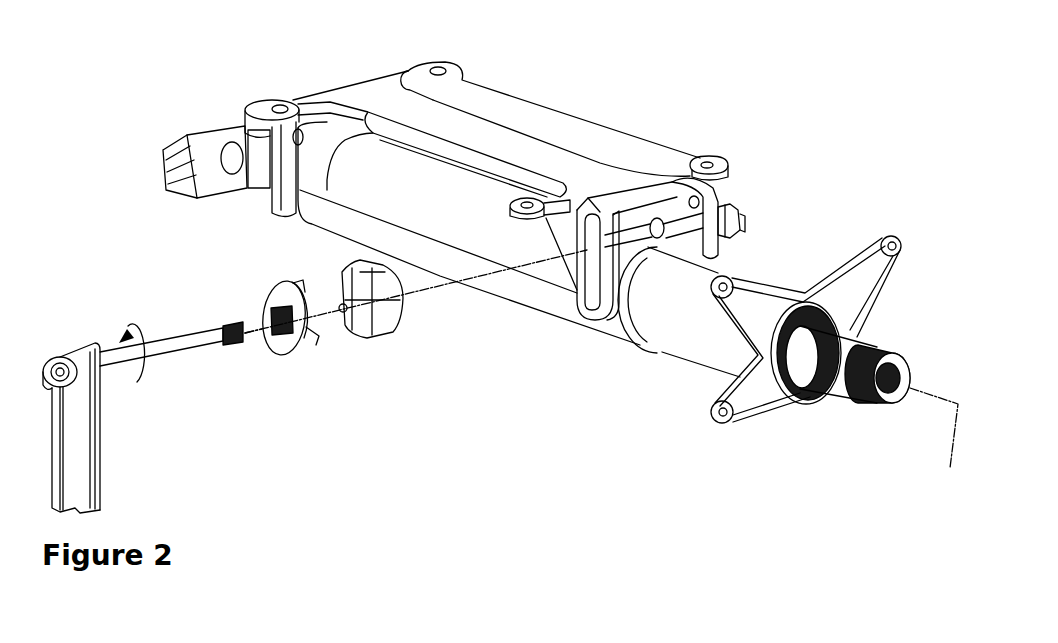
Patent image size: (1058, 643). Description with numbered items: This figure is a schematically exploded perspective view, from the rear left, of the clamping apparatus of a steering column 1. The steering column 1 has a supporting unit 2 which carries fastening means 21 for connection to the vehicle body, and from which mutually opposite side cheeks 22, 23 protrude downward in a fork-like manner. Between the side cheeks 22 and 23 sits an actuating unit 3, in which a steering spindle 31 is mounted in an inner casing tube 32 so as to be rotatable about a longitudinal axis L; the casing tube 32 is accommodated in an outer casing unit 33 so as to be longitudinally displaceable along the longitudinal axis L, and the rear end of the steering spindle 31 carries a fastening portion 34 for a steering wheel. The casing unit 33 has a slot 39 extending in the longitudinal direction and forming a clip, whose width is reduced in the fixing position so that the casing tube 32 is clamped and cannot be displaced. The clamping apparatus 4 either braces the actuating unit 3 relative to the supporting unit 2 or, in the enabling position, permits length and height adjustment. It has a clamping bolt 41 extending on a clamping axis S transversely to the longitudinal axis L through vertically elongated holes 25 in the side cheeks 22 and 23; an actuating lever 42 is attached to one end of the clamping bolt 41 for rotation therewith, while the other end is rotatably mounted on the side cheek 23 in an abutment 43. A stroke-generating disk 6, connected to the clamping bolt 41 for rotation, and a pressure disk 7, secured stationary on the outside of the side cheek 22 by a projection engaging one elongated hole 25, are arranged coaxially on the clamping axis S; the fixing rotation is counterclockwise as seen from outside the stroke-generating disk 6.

The steering column 1 is at (517, 54).
The supporting unit 2 is at (372, 95).
The fastening means 21 is at (439, 66).
The side cheek 22 is at (577, 270).
The side cheek 23 is at (716, 230).
The elongated holes 25 is at (593, 214).
The actuating unit 3 is at (607, 341).
The steering spindle 31 is at (830, 368).
The casing tube 32 is at (705, 348).
The casing unit 33 is at (335, 222).
The fastening portion 34 is at (887, 348).
The slot 39 is at (660, 225).
The clamping apparatus 4 is at (198, 289).
The clamping bolt 41 is at (186, 346).
The actuating lever 42 is at (78, 453).
The abutment 43 is at (742, 215).
The stroke-generating disk 6 is at (297, 344).
The pressure disk 7 is at (397, 333).
The clamping axis S is at (437, 288).
The longitudinal axis L is at (934, 442).